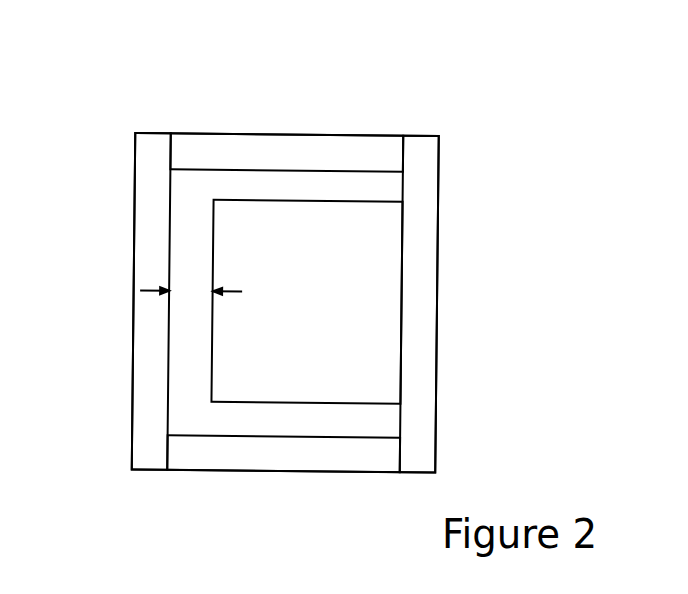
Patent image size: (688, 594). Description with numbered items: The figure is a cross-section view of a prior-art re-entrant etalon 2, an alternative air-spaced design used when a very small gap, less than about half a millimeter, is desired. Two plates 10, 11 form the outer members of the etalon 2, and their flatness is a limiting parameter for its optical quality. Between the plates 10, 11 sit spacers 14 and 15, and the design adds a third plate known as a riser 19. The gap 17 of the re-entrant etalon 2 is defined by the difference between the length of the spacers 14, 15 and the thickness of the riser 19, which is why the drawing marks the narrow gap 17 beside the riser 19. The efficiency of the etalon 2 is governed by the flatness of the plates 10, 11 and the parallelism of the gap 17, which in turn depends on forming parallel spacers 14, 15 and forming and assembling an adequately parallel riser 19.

The re-entrant etalon 2 is at (412, 48).
The plate 10 is at (135, 163).
The plate 11 is at (423, 147).
The spacer 14 is at (272, 147).
The spacer 15 is at (285, 460).
The gap 17 is at (193, 293).
The riser 19 is at (348, 292).